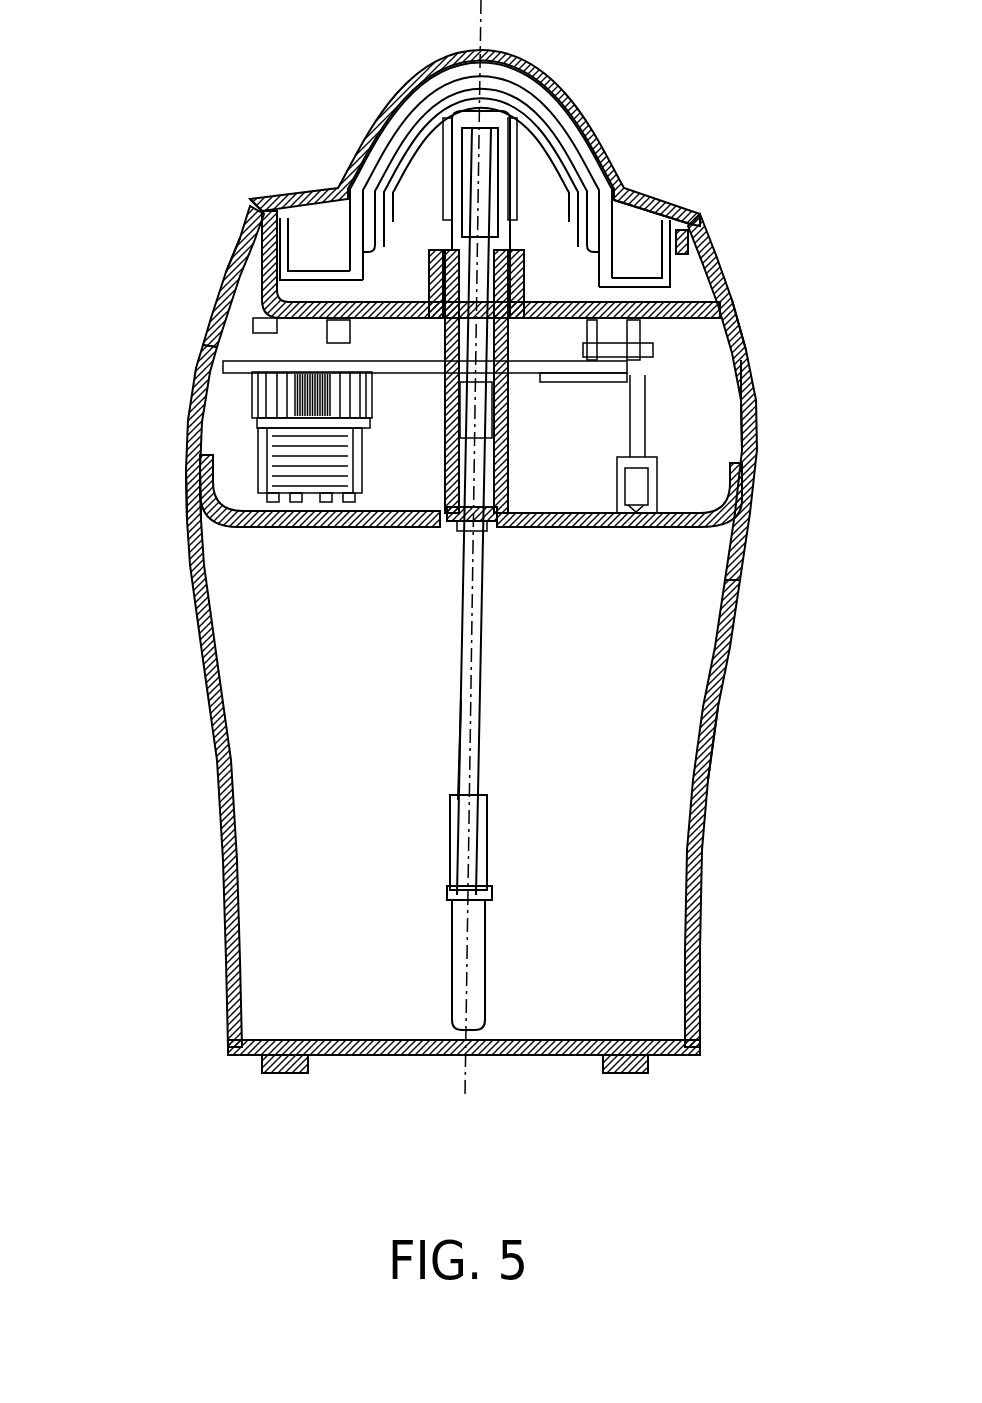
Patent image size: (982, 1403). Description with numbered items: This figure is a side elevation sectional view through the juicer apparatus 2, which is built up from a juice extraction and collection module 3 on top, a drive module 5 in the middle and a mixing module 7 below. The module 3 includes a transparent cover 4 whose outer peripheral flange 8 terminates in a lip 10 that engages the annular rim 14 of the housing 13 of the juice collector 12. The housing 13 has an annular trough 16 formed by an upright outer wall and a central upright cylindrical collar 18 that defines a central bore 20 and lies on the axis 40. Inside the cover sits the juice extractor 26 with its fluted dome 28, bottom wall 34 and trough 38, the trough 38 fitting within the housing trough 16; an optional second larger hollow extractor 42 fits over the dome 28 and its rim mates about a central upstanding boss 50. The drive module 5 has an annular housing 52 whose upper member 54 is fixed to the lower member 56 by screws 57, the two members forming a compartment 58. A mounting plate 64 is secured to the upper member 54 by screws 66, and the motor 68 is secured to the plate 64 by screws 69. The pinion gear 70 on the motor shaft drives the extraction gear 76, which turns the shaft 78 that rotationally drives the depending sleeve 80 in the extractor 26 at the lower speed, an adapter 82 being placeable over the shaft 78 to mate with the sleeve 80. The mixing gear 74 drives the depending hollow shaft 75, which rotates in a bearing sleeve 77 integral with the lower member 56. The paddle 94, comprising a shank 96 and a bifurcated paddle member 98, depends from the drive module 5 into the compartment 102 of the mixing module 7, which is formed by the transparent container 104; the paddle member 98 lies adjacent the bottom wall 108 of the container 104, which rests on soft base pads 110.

The apparatus 2 is at (134, 454).
The juice extraction and collection module 3 is at (182, 192).
The cover 4 is at (597, 115).
The drive module 5 is at (280, 213).
The mixing module 7 is at (750, 733).
The outer peripheral flange 8 is at (273, 203).
The lip 10 is at (697, 230).
The juice collector 12 is at (780, 278).
The housing 13 is at (227, 270).
The annular rim 14 is at (693, 233).
The annular trough 16 is at (380, 307).
The central upright cylindrical collar 18 is at (527, 253).
The central bore 20 is at (423, 250).
The juice extractor 26 is at (423, 110).
The fluted dome 28 is at (567, 153).
The bottom wall 34 is at (313, 273).
The trough 38 is at (653, 223).
The axis 40 is at (473, 645).
The second larger hollow extractor 42 is at (447, 70).
The central upstanding boss 50 is at (592, 263).
The annular housing 52 is at (758, 447).
The upper member 54 is at (193, 393).
The lower member 56 is at (237, 467).
The screws 57 is at (653, 432).
The compartment 58 is at (723, 400).
The mounting plate 64 is at (555, 368).
The screws 66 is at (650, 387).
The motor 68 is at (297, 467).
The screws 69 is at (247, 390).
The pinion gear 70 is at (297, 392).
The mixing gear 74 is at (528, 387).
The hollow shaft 75 is at (487, 452).
The extraction gear 76 is at (415, 348).
The bearing sleeve 77 is at (505, 478).
The shaft 78 is at (443, 143).
The depending sleeve 80 is at (443, 173).
The adapter 82 is at (512, 73).
The paddle 94 is at (492, 742).
The shank 96 is at (457, 735).
The bifurcated paddle member 98 is at (477, 930).
The compartment 102 is at (676, 822).
The container 104 is at (218, 800).
The bottom wall 108 is at (640, 1040).
The base pads 110 is at (277, 1073).